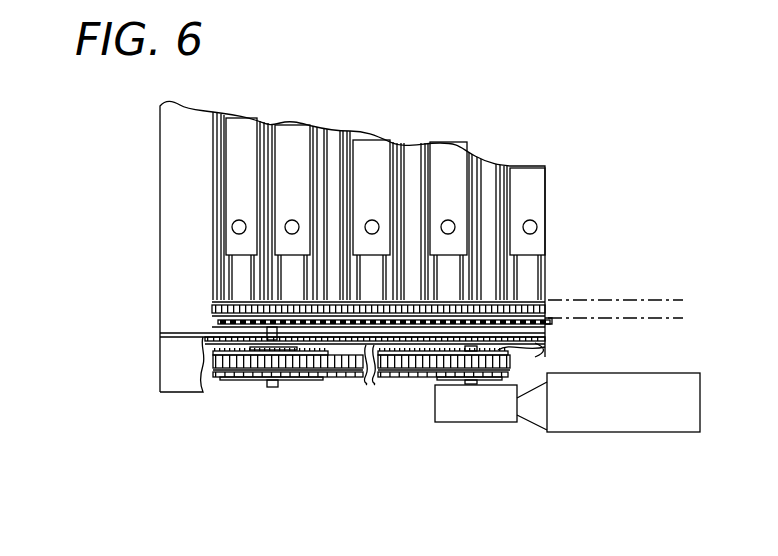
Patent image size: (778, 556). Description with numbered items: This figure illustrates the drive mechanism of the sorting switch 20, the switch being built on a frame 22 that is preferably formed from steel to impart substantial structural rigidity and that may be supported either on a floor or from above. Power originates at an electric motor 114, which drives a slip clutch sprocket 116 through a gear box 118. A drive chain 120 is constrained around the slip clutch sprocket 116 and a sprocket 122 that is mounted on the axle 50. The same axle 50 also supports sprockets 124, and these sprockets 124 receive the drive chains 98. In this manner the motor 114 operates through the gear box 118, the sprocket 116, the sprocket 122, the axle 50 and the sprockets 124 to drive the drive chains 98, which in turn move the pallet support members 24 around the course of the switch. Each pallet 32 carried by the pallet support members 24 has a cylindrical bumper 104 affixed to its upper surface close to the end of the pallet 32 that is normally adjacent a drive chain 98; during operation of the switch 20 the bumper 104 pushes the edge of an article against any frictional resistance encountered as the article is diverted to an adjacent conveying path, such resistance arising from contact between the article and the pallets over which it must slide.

The sorting switch 20 is at (124, 144).
The frame 22 is at (155, 380).
The pallet support members 24 is at (498, 178).
The pallet 32 is at (307, 123).
The axle 50 is at (240, 343).
The drive chains 98 is at (553, 297).
The cylindrical bumper 104 is at (213, 226).
The electric motor 114 is at (620, 377).
The slip clutch sprocket 116 is at (540, 352).
The gear box 118 is at (477, 413).
The drive chain 120 is at (342, 388).
The sprocket 122 is at (242, 384).
The sprockets 124 is at (218, 322).